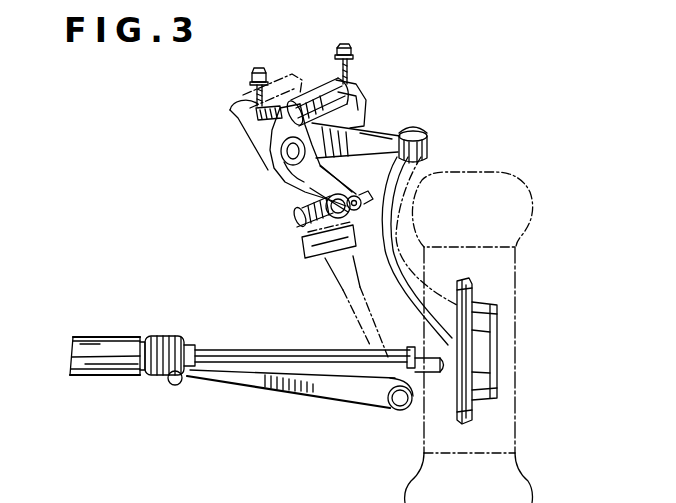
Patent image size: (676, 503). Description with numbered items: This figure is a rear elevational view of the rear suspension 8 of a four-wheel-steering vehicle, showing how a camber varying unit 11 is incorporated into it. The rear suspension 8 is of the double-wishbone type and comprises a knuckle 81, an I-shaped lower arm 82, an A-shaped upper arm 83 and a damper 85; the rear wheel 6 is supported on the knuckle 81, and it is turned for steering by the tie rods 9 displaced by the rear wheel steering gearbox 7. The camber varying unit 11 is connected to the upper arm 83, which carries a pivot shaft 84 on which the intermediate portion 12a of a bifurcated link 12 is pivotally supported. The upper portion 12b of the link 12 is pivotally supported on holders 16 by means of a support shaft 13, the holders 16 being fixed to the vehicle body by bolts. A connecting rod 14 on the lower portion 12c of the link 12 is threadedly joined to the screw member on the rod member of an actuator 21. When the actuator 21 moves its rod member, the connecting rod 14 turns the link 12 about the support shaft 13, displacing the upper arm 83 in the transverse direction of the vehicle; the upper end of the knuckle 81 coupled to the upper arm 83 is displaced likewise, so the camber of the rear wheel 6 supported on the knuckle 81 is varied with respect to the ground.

The rear wheel 6 is at (534, 205).
The rear wheel steering gearbox 7 is at (103, 347).
The rear suspension 8 is at (433, 148).
The tie rods 9 is at (244, 355).
The camber varying unit 11 is at (404, 78).
The bifurcated link 12 is at (298, 185).
The intermediate portion 12a is at (290, 177).
The upper portion 12b is at (357, 112).
The lower portion 12c is at (303, 246).
The support shaft 13 is at (318, 98).
The connecting rod 14 is at (362, 228).
The holders 16 is at (255, 106).
The actuator 21 is at (296, 209).
The knuckle 81 is at (393, 244).
The I-shaped lower arm 82 is at (325, 392).
The A-shaped upper arm 83 is at (386, 140).
The pivot shaft 84 is at (372, 138).
The damper 85 is at (262, 143).